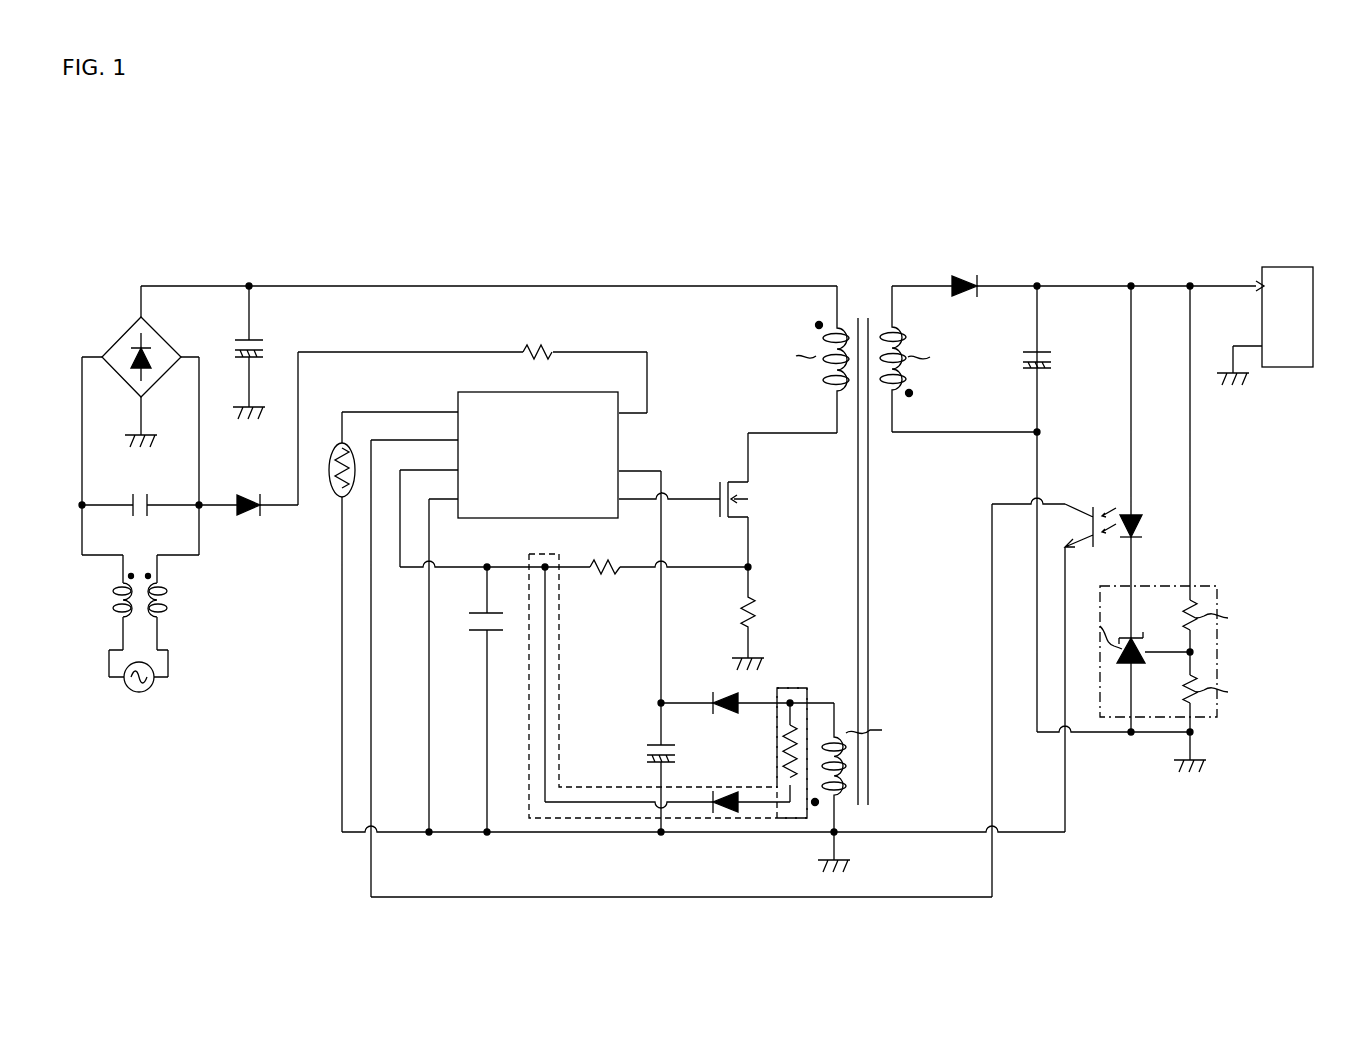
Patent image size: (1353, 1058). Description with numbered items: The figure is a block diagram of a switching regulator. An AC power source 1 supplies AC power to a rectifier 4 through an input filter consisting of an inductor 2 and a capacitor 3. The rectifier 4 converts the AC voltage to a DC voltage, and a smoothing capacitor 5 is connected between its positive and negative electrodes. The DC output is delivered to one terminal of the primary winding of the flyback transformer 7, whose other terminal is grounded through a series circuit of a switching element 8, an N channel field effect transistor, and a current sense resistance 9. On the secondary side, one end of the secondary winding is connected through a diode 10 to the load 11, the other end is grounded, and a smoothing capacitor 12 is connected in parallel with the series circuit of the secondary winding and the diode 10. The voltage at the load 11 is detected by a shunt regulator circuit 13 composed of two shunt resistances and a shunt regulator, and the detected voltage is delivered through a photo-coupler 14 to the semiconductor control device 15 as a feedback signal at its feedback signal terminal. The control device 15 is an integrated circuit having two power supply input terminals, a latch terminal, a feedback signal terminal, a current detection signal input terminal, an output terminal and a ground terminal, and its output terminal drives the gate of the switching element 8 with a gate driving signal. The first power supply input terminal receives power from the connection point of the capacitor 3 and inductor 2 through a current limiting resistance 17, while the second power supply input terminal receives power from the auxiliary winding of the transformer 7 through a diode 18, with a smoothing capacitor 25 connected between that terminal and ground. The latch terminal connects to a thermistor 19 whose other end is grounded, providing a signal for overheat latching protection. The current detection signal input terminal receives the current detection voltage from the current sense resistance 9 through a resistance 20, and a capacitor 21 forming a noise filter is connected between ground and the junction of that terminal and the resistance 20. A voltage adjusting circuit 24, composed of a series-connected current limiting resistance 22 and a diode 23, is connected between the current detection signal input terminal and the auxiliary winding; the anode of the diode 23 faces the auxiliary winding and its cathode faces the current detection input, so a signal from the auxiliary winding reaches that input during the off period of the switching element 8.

The AC power source 1 is at (146, 690).
The inductor 2 is at (167, 598).
The capacitor 3 is at (151, 498).
The rectifier 4 is at (170, 346).
The smoothing capacitor 5 is at (265, 350).
The flyback transformer 7 is at (872, 282).
The switching element 8 is at (740, 482).
The current sense resistance 9 is at (756, 610).
The diode 10 is at (247, 517).
The load 11 is at (1287, 267).
The smoothing capacitor 12 is at (1054, 356).
The shunt regulator circuit 13 is at (1203, 586).
The photo-coupler 14 is at (1103, 505).
The semiconductor control device 15 is at (548, 391).
The current limiting resistance 17 is at (553, 352).
The diode 18 is at (724, 695).
The thermistor 19 is at (342, 443).
The resistance 20 is at (610, 574).
The capacitor 21 is at (478, 634).
The current limiting resistance 22 is at (784, 744).
The diode 23 is at (722, 796).
The voltage adjusting circuit 24 is at (606, 787).
The smoothing capacitor 25 is at (652, 742).